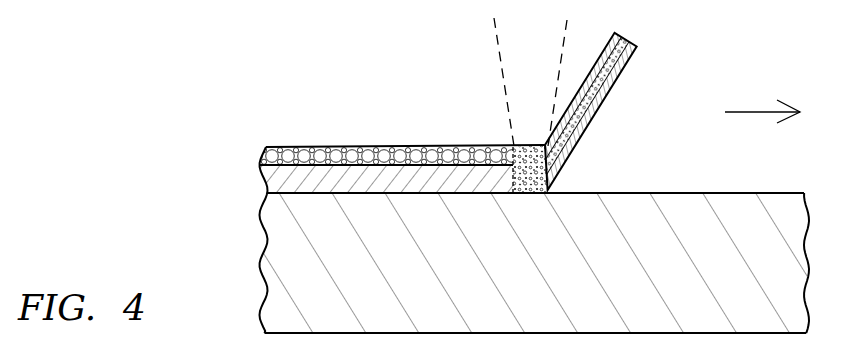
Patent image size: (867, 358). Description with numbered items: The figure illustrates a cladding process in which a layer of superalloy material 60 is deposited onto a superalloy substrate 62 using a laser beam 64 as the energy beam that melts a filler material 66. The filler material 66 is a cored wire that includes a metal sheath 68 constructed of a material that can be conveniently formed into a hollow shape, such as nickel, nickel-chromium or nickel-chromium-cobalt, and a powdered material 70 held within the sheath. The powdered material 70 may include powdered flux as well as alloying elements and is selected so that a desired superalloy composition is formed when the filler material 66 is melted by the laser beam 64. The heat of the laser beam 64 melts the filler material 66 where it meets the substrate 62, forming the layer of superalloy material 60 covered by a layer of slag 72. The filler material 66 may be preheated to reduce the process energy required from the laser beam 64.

The layer of superalloy material 60 is at (275, 180).
The superalloy substrate 62 is at (275, 252).
The laser beam 64 is at (500, 58).
The filler material 66 is at (606, 100).
The metal sheath 68 is at (606, 100).
The powdered material 70 is at (628, 36).
The layer of slag 72 is at (280, 156).